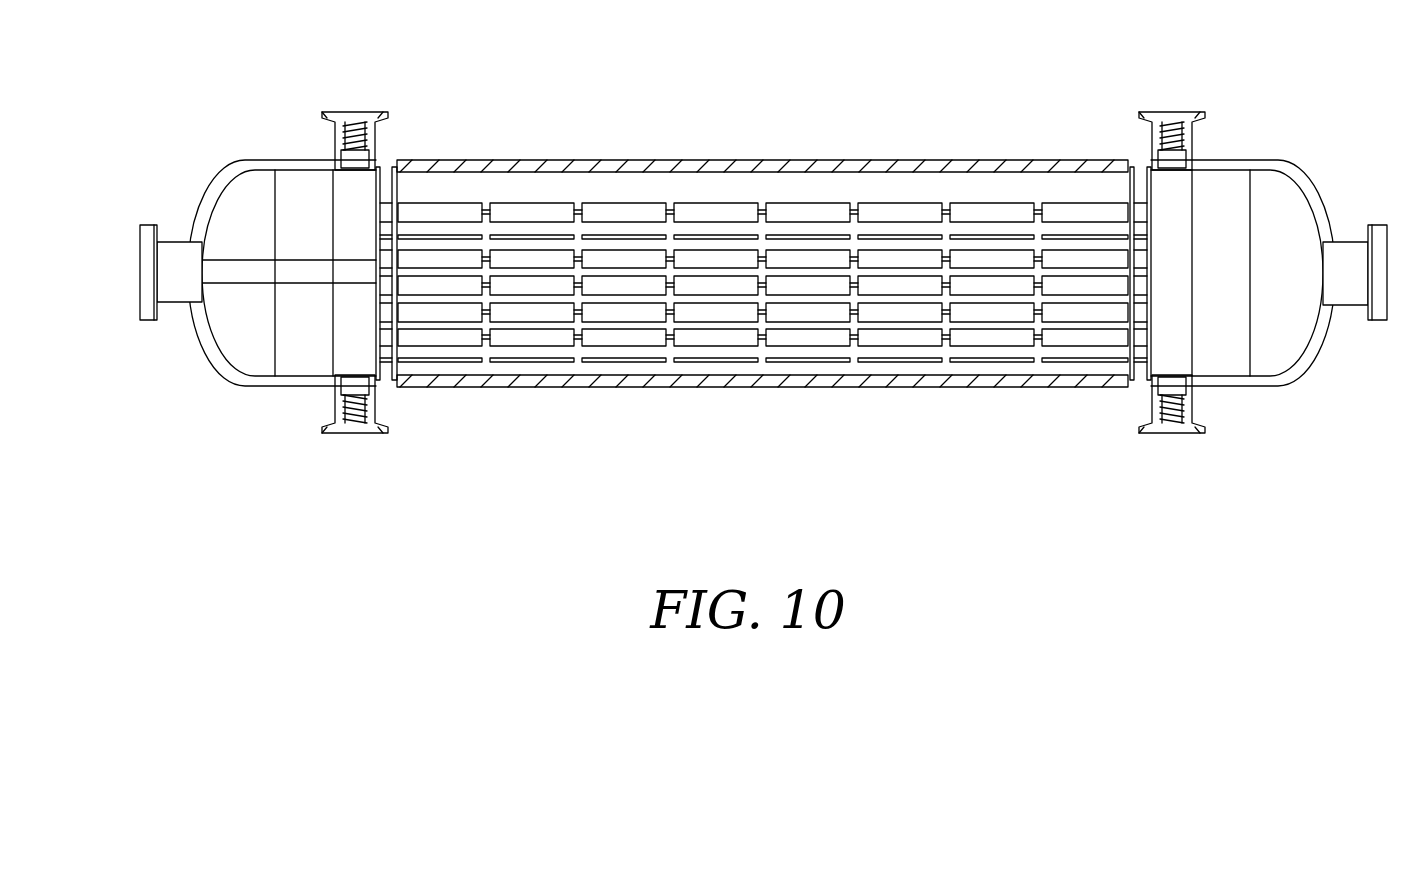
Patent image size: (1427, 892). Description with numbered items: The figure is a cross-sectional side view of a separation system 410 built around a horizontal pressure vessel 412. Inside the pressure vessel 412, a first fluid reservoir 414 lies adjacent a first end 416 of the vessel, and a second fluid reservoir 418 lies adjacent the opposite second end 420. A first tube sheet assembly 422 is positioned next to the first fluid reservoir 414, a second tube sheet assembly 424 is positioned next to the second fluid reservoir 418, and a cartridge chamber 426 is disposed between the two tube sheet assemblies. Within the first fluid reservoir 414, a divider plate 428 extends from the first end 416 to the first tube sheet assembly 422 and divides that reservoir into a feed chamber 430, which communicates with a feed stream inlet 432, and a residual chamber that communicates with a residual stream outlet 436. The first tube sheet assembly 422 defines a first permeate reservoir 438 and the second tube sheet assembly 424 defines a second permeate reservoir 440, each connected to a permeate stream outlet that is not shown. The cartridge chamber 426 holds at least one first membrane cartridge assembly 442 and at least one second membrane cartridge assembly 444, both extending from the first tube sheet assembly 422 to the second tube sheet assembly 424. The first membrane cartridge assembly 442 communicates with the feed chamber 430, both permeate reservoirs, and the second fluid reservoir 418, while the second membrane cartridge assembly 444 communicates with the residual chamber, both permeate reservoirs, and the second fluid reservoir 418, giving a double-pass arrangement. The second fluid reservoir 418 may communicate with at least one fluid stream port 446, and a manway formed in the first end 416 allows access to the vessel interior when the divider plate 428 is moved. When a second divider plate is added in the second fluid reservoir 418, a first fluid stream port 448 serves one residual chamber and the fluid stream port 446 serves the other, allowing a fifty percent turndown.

The separation system 410 is at (720, 83).
The pressure vessel 412 is at (760, 150).
The first fluid reservoir 414 is at (213, 313).
The first end 416 is at (205, 392).
The second fluid reservoir 418 is at (1265, 185).
The second end 420 is at (1340, 380).
The first tube sheet assembly 422 is at (388, 360).
The second tube sheet assembly 424 is at (1137, 360).
The cartridge chamber 426 is at (878, 188).
The divider plate 428 is at (218, 265).
The feed chamber 430 is at (293, 365).
The feed stream inlet 432 is at (352, 433).
The residual stream outlet 436 is at (345, 112).
The first permeate reservoir 438 is at (250, 195).
The second permeate reservoir 440 is at (1140, 185).
The first membrane cartridge assembly 442 is at (808, 345).
The second membrane cartridge assembly 444 is at (622, 205).
The fluid stream port 446 is at (140, 270).
The first fluid stream port 448 is at (1180, 422).